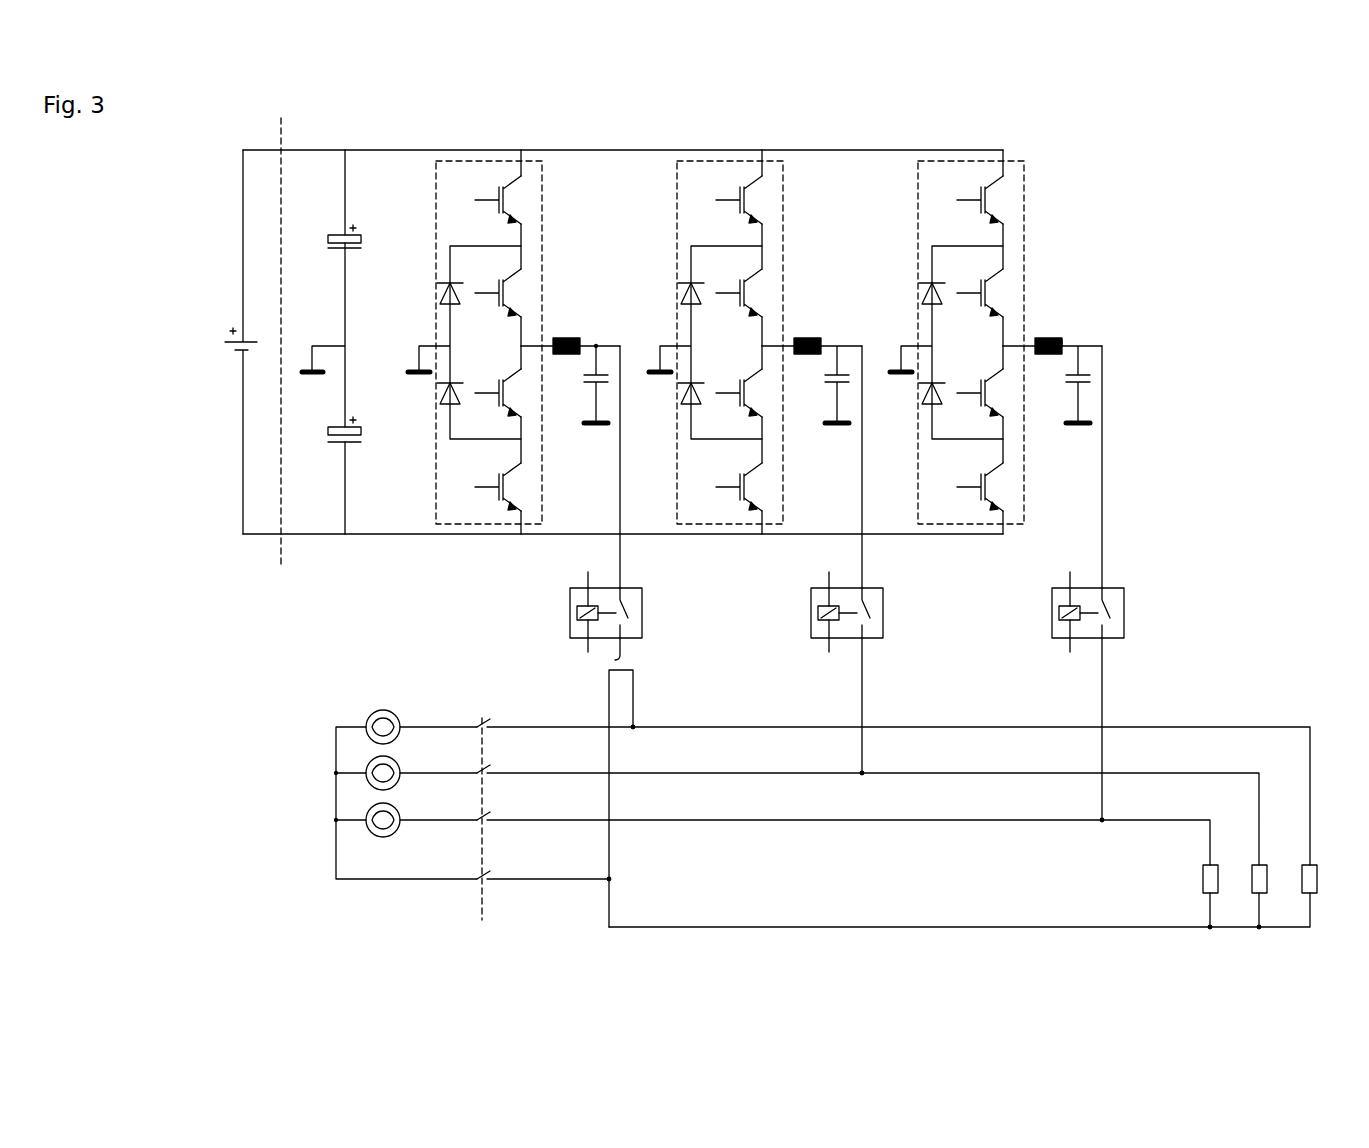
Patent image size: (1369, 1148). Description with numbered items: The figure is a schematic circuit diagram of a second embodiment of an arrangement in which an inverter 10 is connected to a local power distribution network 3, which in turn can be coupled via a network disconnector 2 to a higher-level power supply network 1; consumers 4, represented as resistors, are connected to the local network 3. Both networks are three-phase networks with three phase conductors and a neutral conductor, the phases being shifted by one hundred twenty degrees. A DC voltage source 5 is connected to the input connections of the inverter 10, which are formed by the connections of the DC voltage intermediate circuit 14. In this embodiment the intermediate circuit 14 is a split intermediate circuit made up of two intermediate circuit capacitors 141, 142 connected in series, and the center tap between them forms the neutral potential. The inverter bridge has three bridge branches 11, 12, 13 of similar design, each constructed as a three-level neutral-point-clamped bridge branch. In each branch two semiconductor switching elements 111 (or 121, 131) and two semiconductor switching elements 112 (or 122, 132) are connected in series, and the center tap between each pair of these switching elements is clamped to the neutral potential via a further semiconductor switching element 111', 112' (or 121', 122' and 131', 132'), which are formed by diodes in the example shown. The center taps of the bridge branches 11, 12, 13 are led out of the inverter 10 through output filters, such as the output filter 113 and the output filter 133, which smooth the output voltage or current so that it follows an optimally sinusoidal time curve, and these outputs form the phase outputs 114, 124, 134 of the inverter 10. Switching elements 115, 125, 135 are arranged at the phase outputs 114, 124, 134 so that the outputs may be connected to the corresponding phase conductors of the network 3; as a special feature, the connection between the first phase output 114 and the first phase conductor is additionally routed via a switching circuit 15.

The higher-level power supply network 1 is at (353, 900).
The network disconnector 2 is at (485, 882).
The local power distribution network 3 is at (1223, 705).
The consumers 4 is at (1313, 865).
The DC voltage source 5 is at (232, 353).
The inverter 10 is at (1140, 91).
The first bridge branch 11 is at (508, 301).
The second bridge branch 12 is at (742, 300).
The third bridge branch 13 is at (994, 315).
The DC voltage intermediate circuit 14 is at (362, 293).
The switching circuit 15 is at (615, 659).
The semiconductor switching elements 111 is at (565, 248).
The further semiconductor switching element 111' is at (414, 281).
The semiconductor switching elements 112 is at (538, 440).
The further semiconductor switching element 112' is at (412, 400).
The output filter 113 is at (600, 372).
The first phase output 114 is at (621, 568).
The switching element 115 is at (643, 612).
The semiconductor switching elements 121 is at (788, 248).
The further semiconductor switching element 121' is at (663, 270).
The semiconductor switching elements 122 is at (786, 440).
The further semiconductor switching element 122' is at (663, 428).
The second phase output 124 is at (864, 563).
The switching element 125 is at (884, 612).
The semiconductor switching elements 131 is at (1044, 248).
The further semiconductor switching element 131' is at (900, 270).
The semiconductor switching elements 132 is at (1028, 440).
The further semiconductor switching element 132' is at (904, 429).
The output filter 133 is at (1090, 372).
The third phase output 134 is at (1105, 530).
The switching element 135 is at (1125, 612).
The intermediate circuit capacitor 141 is at (362, 236).
The intermediate circuit capacitor 142 is at (358, 444).